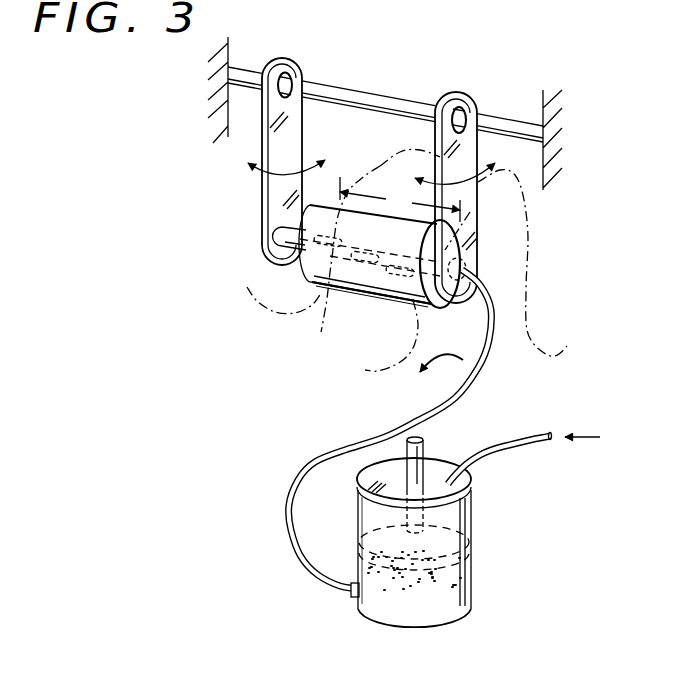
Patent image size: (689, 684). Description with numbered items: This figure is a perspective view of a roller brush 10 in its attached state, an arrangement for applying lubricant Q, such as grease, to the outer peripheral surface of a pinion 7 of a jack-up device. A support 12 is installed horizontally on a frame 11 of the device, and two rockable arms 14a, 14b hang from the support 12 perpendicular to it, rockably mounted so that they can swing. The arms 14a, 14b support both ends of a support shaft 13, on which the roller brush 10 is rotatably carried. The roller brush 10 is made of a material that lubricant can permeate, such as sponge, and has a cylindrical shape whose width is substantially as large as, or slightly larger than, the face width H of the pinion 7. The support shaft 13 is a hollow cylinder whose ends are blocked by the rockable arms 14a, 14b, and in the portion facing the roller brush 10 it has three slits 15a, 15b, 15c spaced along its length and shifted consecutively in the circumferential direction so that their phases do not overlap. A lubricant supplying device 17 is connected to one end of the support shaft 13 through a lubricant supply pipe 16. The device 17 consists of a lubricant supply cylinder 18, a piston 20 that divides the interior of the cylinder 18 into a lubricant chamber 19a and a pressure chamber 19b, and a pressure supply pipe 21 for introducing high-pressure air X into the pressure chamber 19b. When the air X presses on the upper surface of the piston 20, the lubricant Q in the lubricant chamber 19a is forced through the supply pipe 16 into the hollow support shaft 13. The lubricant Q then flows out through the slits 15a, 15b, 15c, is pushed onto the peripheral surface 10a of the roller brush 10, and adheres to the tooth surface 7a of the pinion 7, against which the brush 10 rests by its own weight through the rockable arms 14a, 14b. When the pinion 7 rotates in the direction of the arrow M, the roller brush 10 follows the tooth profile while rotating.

The pinion 7 is at (537, 337).
The tooth surface 7a is at (380, 164).
The roller brush 10 is at (320, 294).
The peripheral surface 10a is at (381, 297).
The frame 11 is at (228, 120).
The support 12 is at (381, 96).
The support shaft 13 is at (280, 243).
The rockable arm 14a is at (262, 213).
The rockable arm 14b is at (477, 190).
The slit 15a is at (248, 287).
The slit 15b is at (333, 304).
The slit 15c is at (431, 317).
The lubricant supply pipe 16 is at (490, 370).
The lubricant supplying device 17 is at (450, 530).
The lubricant supply cylinder 18 is at (377, 612).
The lubricant chamber 19a is at (462, 593).
The pressure chamber 19b is at (372, 512).
The piston 20 is at (453, 533).
The pressure supply pipe 21 is at (518, 445).
The face width H is at (400, 199).
The arrow M is at (433, 376).
The lubricant Q is at (444, 570).
The high-pressure air X is at (582, 420).